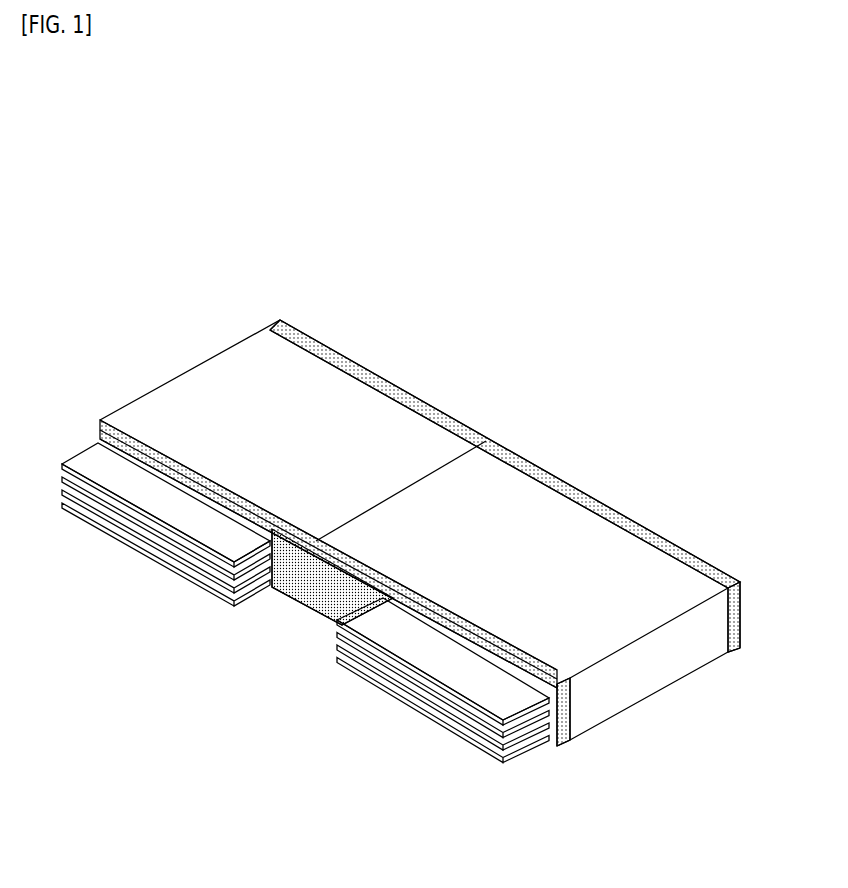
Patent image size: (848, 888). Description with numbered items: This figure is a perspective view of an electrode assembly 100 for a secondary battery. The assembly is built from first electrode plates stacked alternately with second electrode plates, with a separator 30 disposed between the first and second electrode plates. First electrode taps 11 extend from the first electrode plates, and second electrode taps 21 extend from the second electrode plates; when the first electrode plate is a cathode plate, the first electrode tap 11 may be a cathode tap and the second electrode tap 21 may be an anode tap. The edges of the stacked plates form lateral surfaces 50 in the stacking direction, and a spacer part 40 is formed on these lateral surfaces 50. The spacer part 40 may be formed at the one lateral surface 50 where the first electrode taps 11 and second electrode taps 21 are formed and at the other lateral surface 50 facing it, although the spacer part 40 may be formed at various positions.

The electrode assembly 100 is at (431, 292).
The first electrode tap 11 is at (480, 687).
The second electrode tap 21 is at (135, 491).
The separator 30 is at (512, 490).
The spacer part 40 is at (605, 507).
The lateral surface 50 is at (178, 377).